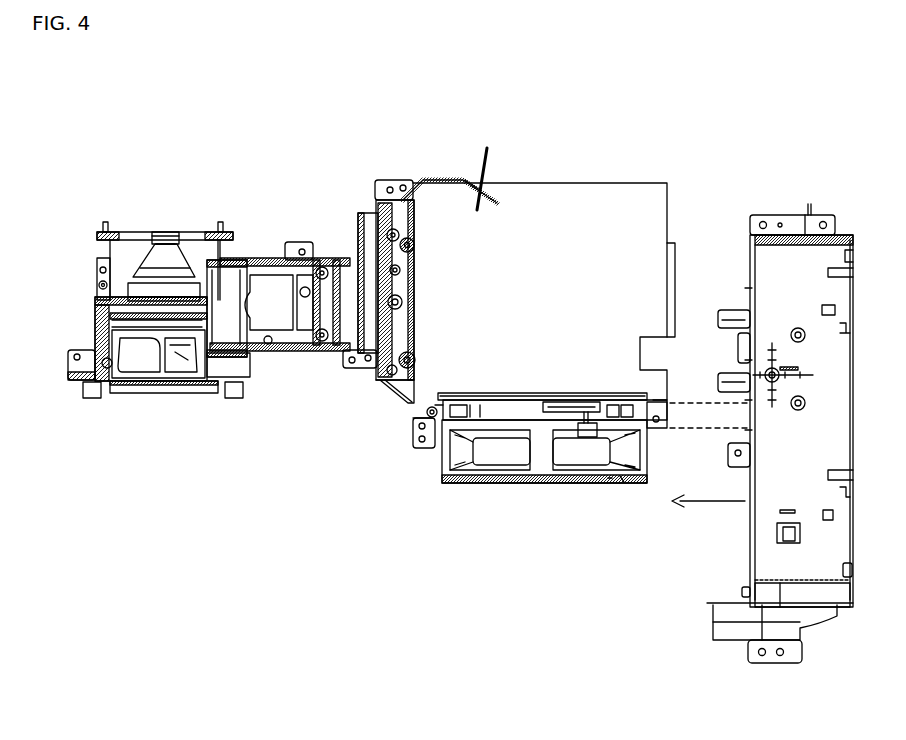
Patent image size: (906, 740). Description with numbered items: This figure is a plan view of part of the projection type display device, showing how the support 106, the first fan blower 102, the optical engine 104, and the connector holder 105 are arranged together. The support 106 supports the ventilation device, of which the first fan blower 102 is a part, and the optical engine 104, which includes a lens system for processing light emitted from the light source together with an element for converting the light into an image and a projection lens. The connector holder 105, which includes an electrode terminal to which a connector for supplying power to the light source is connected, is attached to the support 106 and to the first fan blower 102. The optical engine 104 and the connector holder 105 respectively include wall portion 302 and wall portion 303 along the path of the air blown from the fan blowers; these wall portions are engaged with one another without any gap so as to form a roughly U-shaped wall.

The first fan blower 102 is at (541, 470).
The optical engine 104 is at (267, 300).
The connector holder 105 is at (787, 277).
The support 106 is at (430, 220).
The wall portion of the optical engine 302 is at (425, 268).
The wall portion of the connector holder 303 is at (740, 270).